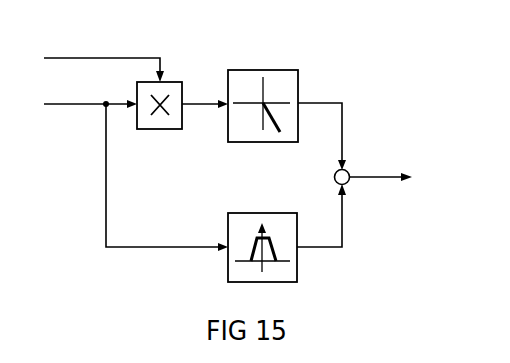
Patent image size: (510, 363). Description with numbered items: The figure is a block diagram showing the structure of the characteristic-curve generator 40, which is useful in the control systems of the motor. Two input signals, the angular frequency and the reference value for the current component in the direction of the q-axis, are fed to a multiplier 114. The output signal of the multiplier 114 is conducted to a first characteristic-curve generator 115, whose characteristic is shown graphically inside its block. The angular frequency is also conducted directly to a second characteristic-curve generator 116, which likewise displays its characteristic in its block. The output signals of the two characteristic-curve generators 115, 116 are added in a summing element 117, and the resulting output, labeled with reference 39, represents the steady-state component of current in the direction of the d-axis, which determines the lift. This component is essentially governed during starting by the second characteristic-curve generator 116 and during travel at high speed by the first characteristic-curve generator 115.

The characteristic-curve generator 40 is at (200, 178).
The multiplier 114 is at (138, 130).
The first characteristic-curve generator 115 is at (298, 76).
The second characteristic-curve generator 116 is at (268, 213).
The summing element 117 is at (336, 172).
The output to element 39 is at (401, 179).